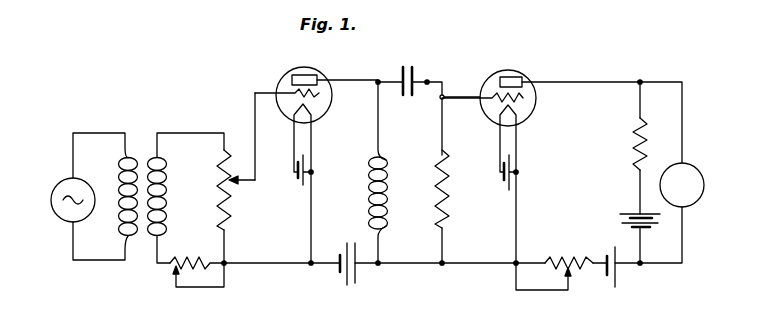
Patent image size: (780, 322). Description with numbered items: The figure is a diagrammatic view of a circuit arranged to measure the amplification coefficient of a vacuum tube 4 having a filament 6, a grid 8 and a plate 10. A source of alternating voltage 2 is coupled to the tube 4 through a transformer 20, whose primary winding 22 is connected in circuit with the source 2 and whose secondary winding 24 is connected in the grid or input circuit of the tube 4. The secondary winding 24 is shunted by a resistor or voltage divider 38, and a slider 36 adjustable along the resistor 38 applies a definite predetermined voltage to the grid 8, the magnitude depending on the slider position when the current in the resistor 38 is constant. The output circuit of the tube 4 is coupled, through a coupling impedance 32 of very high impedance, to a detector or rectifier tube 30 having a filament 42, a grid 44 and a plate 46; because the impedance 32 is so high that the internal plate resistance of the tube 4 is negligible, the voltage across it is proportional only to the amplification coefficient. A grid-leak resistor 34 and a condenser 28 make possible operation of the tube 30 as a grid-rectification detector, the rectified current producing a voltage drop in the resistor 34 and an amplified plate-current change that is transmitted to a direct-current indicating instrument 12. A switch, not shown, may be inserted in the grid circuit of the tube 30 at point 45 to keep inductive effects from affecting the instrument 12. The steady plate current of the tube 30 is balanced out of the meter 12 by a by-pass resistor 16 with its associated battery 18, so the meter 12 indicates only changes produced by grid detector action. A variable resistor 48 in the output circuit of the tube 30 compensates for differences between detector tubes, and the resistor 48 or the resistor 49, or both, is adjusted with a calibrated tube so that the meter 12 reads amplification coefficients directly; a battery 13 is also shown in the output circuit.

The source of alternating voltage 2 is at (57, 187).
The primary winding 22 is at (124, 158).
The secondary winding 24 is at (168, 160).
The transformer 20 is at (142, 233).
The resistor 49 is at (190, 259).
The slider 36 is at (246, 186).
The resistor or voltage divider 38 is at (232, 219).
The vacuum tube 4 is at (312, 148).
The grid 8 is at (293, 92).
The plate 10 is at (318, 76).
The filament 6 is at (314, 112).
The condenser 28 is at (416, 72).
The point in grid circuit 45 is at (426, 86).
The coupling impedance 32 is at (366, 204).
The grid-leak resistor 34 is at (437, 190).
The detector or rectifier tube 30 is at (562, 149).
The grid 44 is at (492, 97).
The plate 46 is at (520, 78).
The filament 42 is at (518, 112).
The by-pass resistor 16 is at (634, 155).
The battery 18 is at (621, 218).
The direct-current indicating instrument 12 is at (697, 167).
The bias battery 13 is at (620, 278).
The variable resistor 48 is at (548, 261).